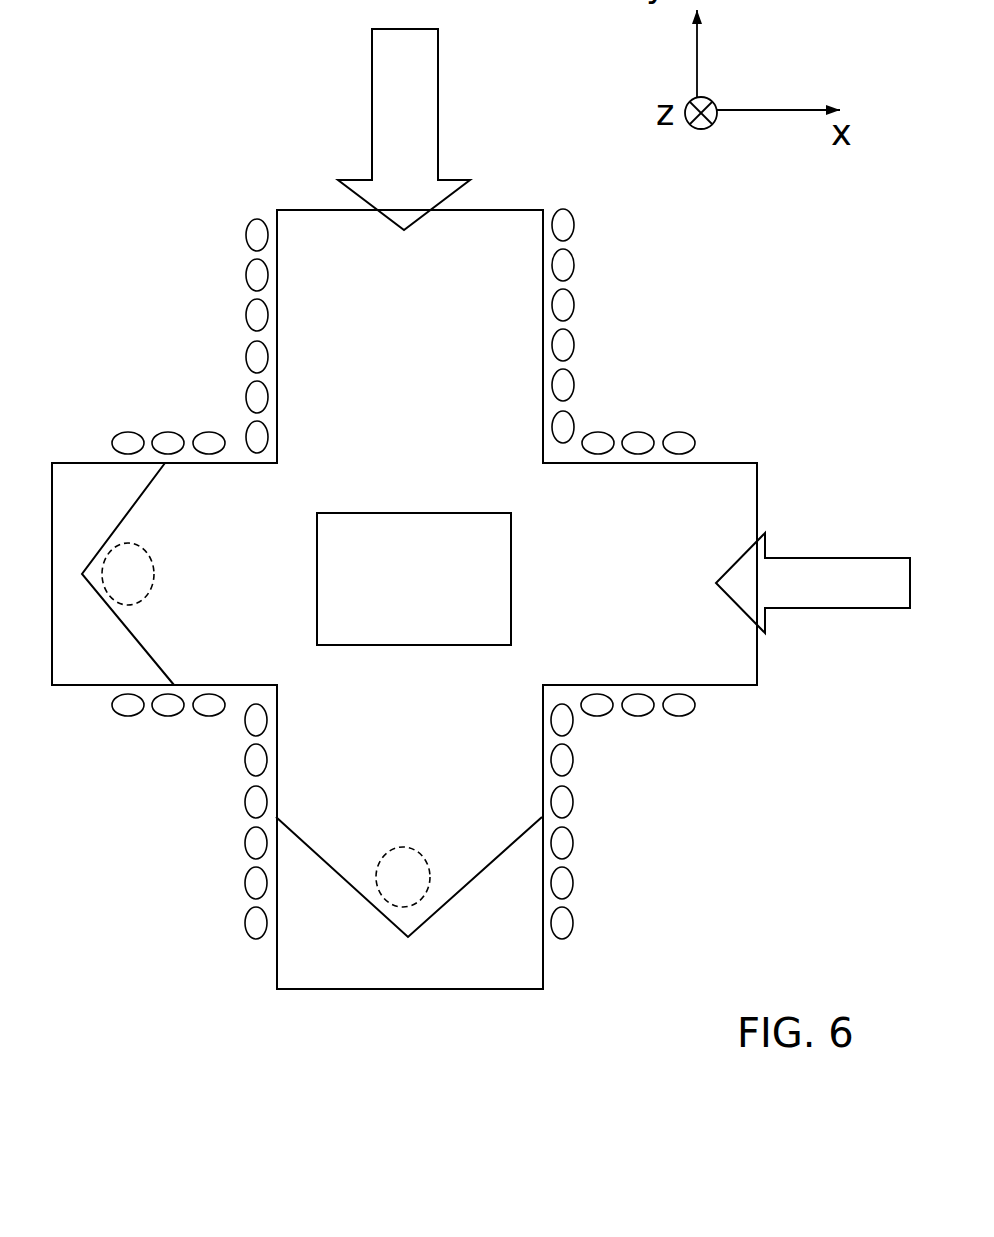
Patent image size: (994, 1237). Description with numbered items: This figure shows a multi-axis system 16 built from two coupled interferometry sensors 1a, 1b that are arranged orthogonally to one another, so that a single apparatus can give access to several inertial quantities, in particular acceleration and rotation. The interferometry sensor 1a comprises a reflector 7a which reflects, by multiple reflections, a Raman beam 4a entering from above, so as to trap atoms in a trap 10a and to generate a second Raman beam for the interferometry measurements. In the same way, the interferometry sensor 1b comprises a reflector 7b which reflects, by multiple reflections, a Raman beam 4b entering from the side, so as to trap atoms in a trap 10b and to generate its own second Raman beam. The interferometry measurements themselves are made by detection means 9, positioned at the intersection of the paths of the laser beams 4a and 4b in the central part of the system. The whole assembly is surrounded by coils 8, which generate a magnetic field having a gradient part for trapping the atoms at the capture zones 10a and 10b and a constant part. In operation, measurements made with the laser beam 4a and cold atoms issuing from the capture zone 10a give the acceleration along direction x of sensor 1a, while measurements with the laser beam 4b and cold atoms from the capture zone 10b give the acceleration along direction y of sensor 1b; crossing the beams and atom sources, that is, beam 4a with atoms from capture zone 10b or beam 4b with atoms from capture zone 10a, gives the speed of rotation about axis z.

The interferometry sensor 1a is at (285, 922).
The interferometry sensor 1b is at (153, 460).
The Raman beam 4a is at (390, 100).
The Raman beam 4b is at (808, 593).
The reflector 7a is at (520, 907).
The reflector 7b is at (103, 665).
The coils 8 is at (562, 342).
The detection means 9 is at (440, 635).
The trap 10a is at (420, 887).
The trap 10b is at (133, 583).
The system 16 is at (626, 330).